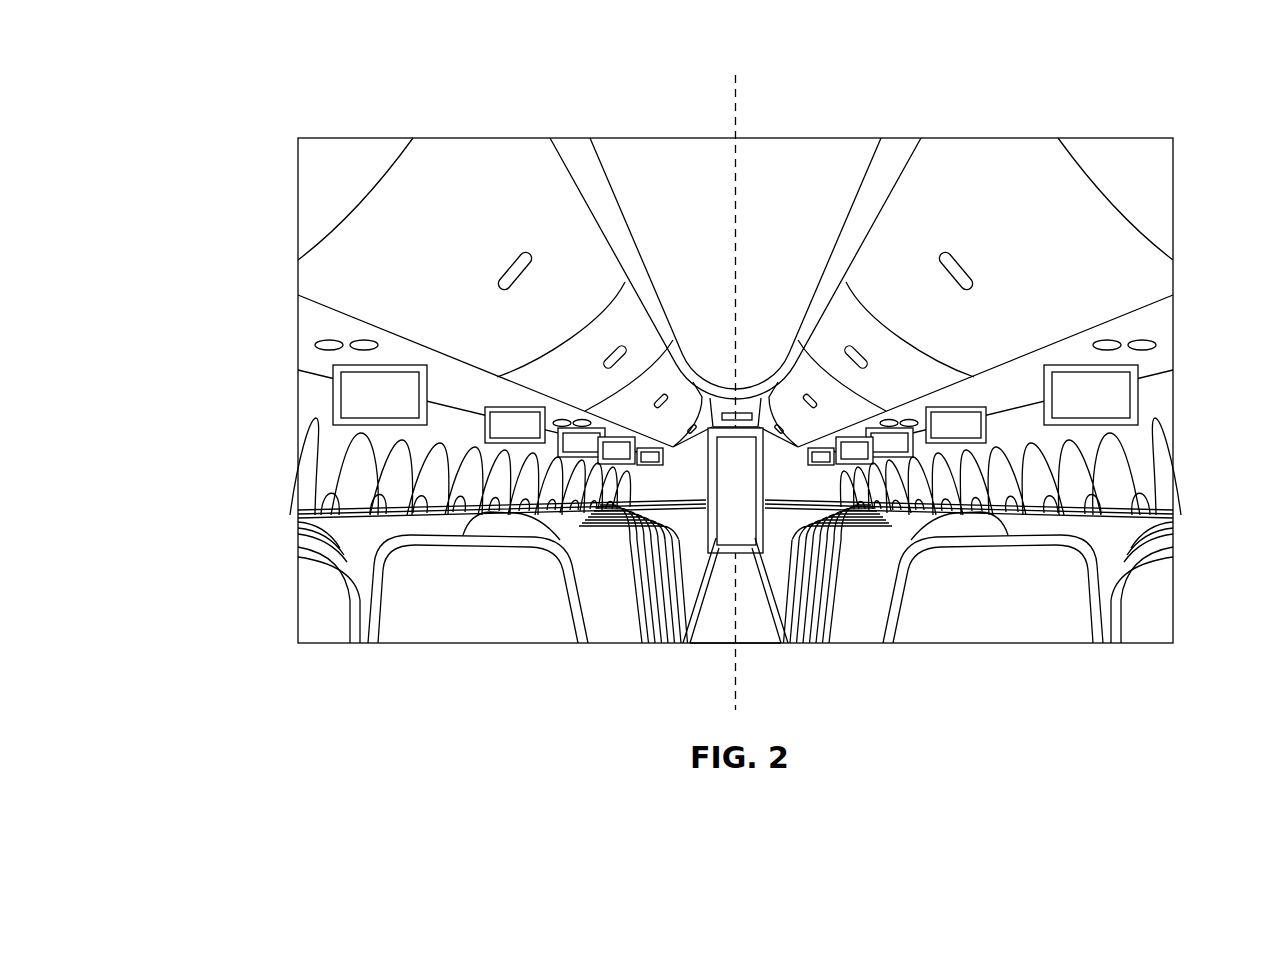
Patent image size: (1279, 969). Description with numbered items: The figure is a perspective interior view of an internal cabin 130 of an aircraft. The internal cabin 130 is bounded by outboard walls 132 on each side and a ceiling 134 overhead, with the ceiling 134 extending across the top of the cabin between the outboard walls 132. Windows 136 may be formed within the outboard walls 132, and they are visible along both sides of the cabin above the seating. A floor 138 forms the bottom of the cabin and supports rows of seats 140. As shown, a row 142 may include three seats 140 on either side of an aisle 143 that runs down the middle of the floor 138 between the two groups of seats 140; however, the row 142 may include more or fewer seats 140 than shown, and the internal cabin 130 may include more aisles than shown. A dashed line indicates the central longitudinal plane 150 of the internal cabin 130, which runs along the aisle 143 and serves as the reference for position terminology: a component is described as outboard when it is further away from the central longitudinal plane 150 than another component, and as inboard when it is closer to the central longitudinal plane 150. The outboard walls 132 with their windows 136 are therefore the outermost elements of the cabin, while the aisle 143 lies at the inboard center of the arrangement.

The internal cabin 130 is at (246, 90).
The outboard walls 132 is at (307, 398).
The ceiling 134 is at (795, 137).
The windows 136 is at (335, 503).
The floor 138 is at (725, 625).
The seats 140 is at (473, 632).
The row 142 is at (305, 603).
The aisle 143 is at (757, 625).
The central longitudinal plane 150 is at (730, 100).